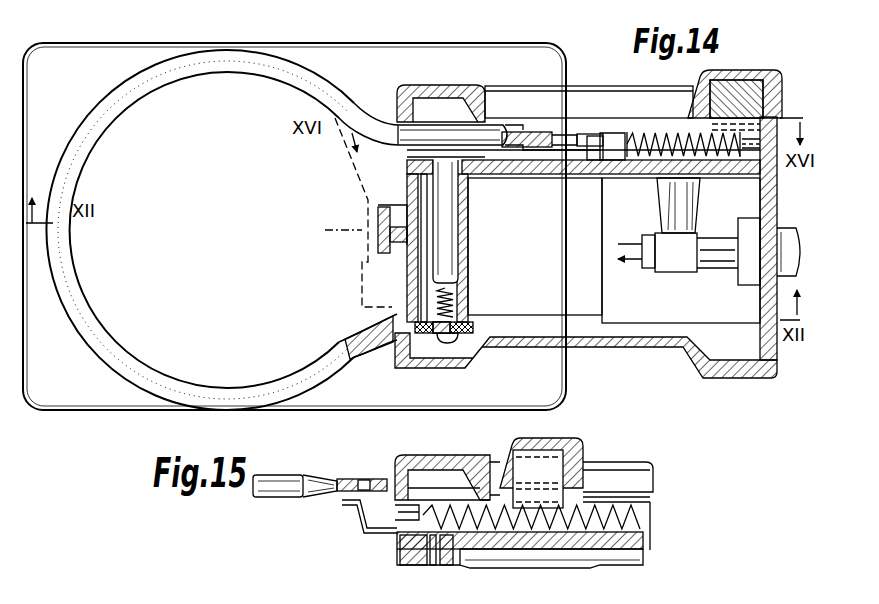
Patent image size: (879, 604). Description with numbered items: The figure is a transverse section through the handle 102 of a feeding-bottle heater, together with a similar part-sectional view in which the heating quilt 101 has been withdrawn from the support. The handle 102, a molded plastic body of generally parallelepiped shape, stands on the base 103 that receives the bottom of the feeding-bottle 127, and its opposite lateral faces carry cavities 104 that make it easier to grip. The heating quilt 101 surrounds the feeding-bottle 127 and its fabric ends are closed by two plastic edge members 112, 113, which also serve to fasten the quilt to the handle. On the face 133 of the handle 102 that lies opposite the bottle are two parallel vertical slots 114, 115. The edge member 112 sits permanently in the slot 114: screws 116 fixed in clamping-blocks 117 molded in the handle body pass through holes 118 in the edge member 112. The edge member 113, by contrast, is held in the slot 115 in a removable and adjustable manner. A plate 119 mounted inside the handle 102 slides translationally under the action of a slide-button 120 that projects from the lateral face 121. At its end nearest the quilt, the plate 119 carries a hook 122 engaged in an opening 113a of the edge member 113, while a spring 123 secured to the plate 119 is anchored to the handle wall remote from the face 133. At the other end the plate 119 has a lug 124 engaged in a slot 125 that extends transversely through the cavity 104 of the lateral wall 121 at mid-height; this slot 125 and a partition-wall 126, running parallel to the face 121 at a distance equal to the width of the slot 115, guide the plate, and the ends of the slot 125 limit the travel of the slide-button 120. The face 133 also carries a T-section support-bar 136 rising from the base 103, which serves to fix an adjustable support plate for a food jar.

In FIG. 14, the heating quilt 101 is at (72, 137).
In FIG. 15, the heating quilt 101 is at (264, 496).
In FIG. 14, the handle 102 is at (762, 205).
In FIG. 14, the base 103 is at (53, 412).
In FIG. 14, the cavity 104 is at (513, 97).
In FIG. 14, the edge member 112 is at (463, 340).
In FIG. 14, the edge member 113 is at (567, 160).
In FIG. 15, the edge member 113 is at (346, 478).
In FIG. 14, the opening 113a is at (557, 153).
In FIG. 15, the opening 113a is at (365, 479).
In FIG. 14, the slot 114 is at (390, 338).
In FIG. 14, the slot 115 is at (393, 155).
In FIG. 15, the slot 115 is at (397, 505).
In FIG. 14, the screw 116 is at (427, 345).
In FIG. 14, the clamping-block 117 is at (470, 240).
In FIG. 14, the hole 118 is at (460, 313).
In FIG. 14, the plate 119 is at (705, 180).
In FIG. 15, the plate 119 is at (437, 565).
In FIG. 14, the slide-button 120 is at (722, 88).
In FIG. 15, the slide-button 120 is at (578, 450).
In FIG. 14, the lateral face 121 is at (585, 86).
In FIG. 14, the hook 122 is at (545, 130).
In FIG. 15, the hook 122 is at (356, 514).
In FIG. 14, the spring 123 is at (632, 165).
In FIG. 15, the spring 123 is at (641, 528).
In FIG. 14, the lug 124 is at (758, 88).
In FIG. 15, the lug 124 is at (552, 475).
In FIG. 14, the slot 125 is at (588, 128).
In FIG. 15, the slot 125 is at (632, 493).
In FIG. 14, the partition-wall 126 is at (483, 178).
In FIG. 15, the partition-wall 126 is at (611, 560).
In FIG. 14, the feeding-bottle 127 is at (85, 307).
In FIG. 14, the face 133 is at (400, 250).
In FIG. 14, the T-section support-bar 136 is at (376, 225).